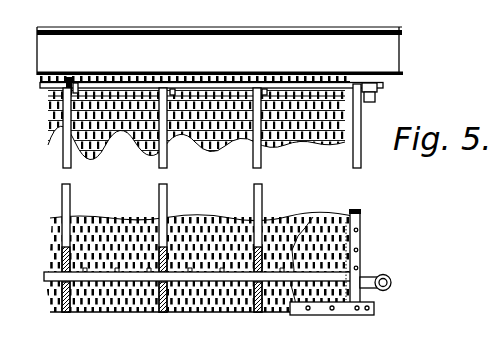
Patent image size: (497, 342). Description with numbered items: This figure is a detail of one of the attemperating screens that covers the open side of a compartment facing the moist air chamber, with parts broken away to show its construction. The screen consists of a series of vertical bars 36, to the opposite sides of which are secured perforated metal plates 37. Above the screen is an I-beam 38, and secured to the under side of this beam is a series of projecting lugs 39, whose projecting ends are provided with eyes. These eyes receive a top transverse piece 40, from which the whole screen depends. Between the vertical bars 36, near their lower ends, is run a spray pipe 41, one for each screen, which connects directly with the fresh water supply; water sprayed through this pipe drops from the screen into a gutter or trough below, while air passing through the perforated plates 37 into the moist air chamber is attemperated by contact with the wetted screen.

The vertical bars 36 is at (71, 157).
The perforated metal plates 37 is at (305, 220).
The I-beam 38 is at (397, 57).
The projecting lugs 39 is at (80, 77).
The top transverse piece 40 is at (60, 76).
The spray pipe 41 is at (374, 277).